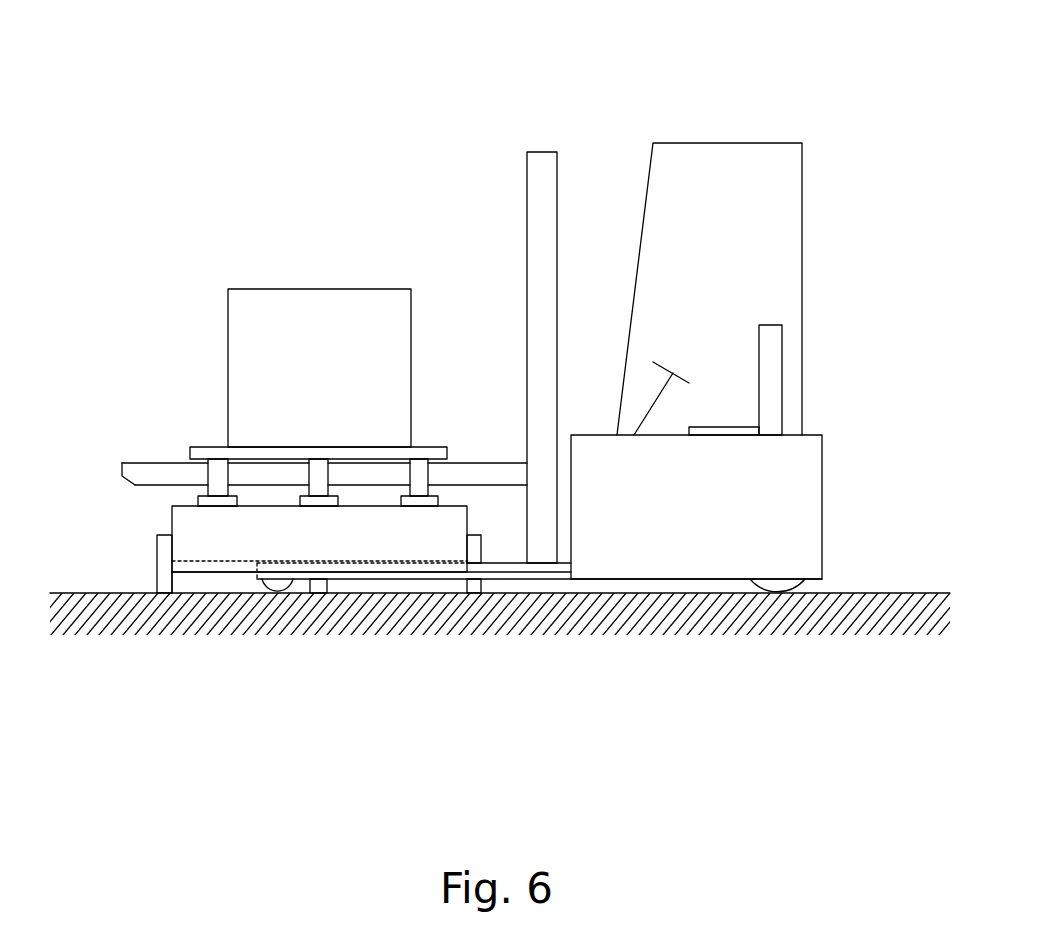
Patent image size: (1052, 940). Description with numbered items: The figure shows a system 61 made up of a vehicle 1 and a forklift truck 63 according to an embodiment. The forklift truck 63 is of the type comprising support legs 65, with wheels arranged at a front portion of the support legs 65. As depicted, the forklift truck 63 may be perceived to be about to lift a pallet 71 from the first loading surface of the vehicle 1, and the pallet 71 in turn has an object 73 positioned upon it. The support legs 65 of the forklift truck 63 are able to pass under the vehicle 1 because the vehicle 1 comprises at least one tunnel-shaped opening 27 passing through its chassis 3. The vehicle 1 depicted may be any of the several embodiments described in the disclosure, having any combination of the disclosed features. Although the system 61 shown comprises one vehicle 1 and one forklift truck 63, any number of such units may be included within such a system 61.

The system 61 is at (335, 95).
The forklift truck 63 is at (853, 413).
The object 73 is at (341, 381).
The pallet 71 is at (208, 457).
The vehicle 1 is at (168, 518).
The chassis 3 is at (168, 557).
The tunnel-shaped opening 27 is at (215, 567).
The support legs 65 is at (303, 575).